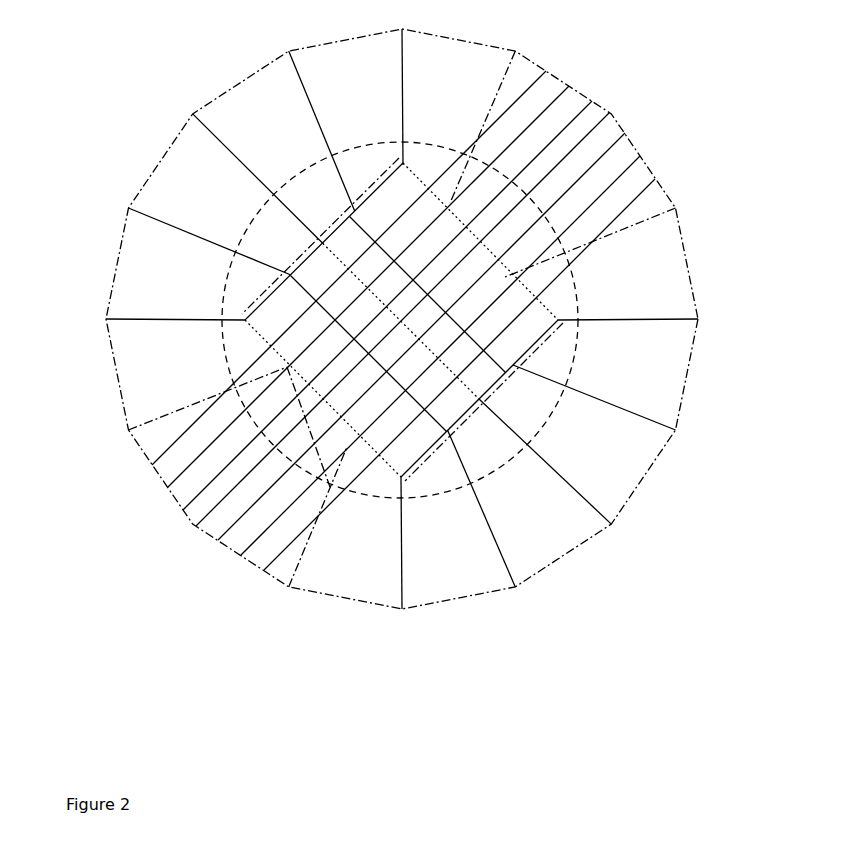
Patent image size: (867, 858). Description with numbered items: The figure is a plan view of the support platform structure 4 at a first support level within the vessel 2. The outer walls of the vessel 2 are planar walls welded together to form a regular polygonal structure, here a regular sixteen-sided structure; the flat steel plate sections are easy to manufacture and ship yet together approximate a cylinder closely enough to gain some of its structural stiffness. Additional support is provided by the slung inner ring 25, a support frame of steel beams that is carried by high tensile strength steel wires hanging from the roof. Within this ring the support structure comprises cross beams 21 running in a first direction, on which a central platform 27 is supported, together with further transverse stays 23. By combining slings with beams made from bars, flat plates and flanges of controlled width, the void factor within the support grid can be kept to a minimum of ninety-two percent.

The vessel 2 is at (155, 163).
The support platform structure 4 is at (184, 94).
The cross beams 21 is at (614, 116).
The transverse stays 23 is at (573, 489).
The inner ring 25 is at (580, 288).
The central platform 27 is at (348, 392).